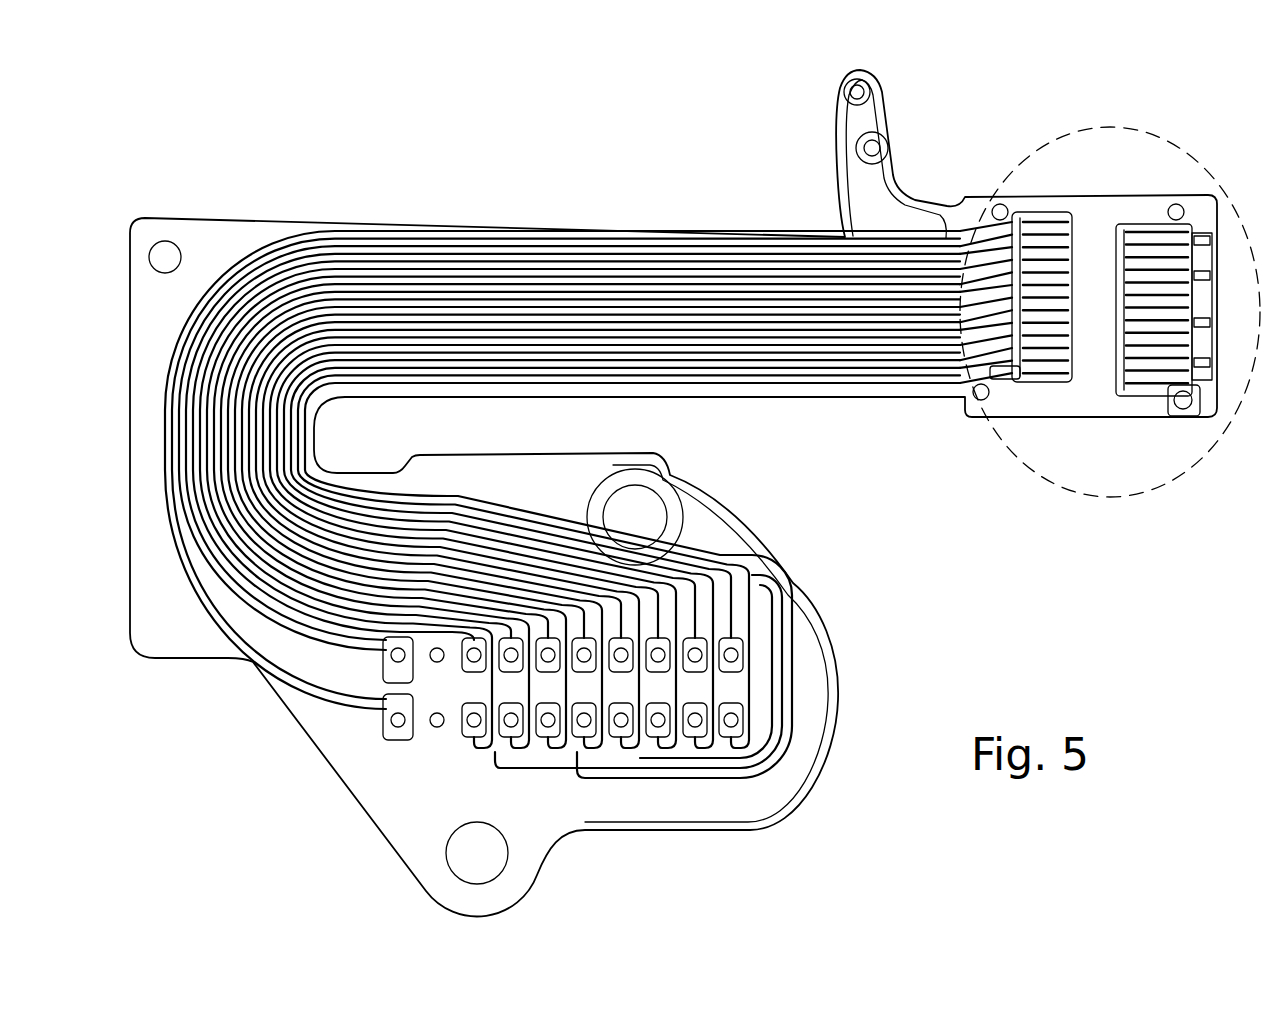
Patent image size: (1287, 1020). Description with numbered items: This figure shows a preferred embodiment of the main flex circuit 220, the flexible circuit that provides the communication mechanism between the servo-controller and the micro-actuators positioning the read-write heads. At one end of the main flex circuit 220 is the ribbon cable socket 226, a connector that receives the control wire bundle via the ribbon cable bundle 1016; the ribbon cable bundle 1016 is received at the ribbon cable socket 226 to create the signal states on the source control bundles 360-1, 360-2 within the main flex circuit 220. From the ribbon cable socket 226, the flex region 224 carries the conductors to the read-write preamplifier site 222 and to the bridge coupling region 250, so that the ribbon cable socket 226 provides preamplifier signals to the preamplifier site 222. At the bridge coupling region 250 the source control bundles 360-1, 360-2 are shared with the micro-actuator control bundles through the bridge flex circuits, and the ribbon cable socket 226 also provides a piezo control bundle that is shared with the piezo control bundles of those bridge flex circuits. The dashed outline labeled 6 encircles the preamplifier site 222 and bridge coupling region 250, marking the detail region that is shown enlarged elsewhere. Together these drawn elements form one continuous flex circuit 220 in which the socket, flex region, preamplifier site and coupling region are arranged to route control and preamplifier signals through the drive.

The main flex circuit 220 is at (128, 97).
The flex region 224 is at (588, 475).
The read-write preamplifier site 222 is at (1147, 188).
The bridge coupling region 250 is at (1207, 197).
The source control bundle 360-1 is at (1212, 240).
The source control bundle 360-2 is at (1215, 372).
The ribbon cable bundle 1016 is at (462, 706).
The ribbon cable socket 226 is at (776, 638).
The detail region of FIG. 6 is at (1062, 500).